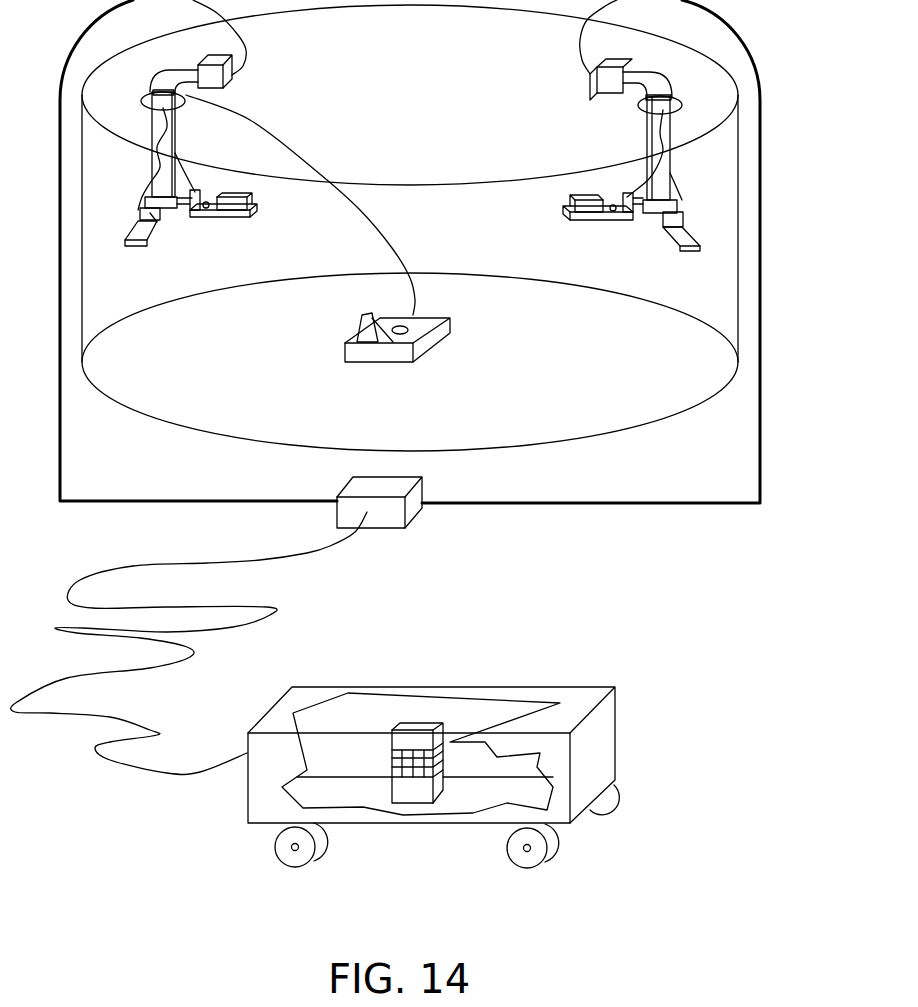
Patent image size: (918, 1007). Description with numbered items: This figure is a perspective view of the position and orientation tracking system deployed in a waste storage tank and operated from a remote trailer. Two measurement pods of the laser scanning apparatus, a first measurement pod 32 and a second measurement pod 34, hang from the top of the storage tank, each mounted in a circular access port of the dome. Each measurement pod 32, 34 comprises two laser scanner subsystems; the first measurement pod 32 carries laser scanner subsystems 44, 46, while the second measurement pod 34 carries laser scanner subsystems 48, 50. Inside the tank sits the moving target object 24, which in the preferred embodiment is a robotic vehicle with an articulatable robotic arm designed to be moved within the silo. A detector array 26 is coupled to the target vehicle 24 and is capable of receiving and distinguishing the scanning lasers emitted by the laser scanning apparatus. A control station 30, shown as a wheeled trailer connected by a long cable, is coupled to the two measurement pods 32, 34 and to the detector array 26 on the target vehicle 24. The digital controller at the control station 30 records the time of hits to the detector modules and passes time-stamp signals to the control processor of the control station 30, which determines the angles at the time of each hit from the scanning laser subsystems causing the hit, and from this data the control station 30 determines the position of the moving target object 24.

The moving target object 24 is at (380, 353).
The detector array 26 is at (408, 330).
The control station 30 is at (400, 797).
The first measurement pod 32 is at (138, 155).
The second measurement pod 34 is at (626, 142).
The laser scanner subsystem 44 is at (132, 246).
The laser scanner subsystem 46 is at (230, 218).
The laser scanner subsystem 48 is at (570, 217).
The laser scanner subsystem 50 is at (667, 239).